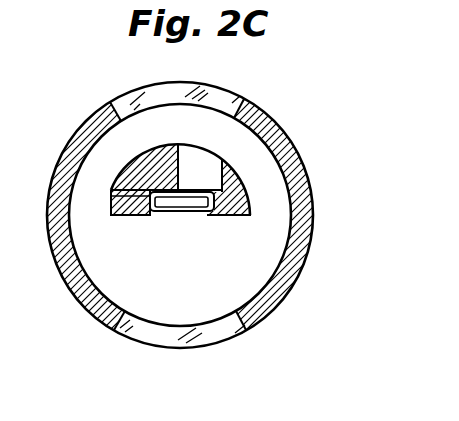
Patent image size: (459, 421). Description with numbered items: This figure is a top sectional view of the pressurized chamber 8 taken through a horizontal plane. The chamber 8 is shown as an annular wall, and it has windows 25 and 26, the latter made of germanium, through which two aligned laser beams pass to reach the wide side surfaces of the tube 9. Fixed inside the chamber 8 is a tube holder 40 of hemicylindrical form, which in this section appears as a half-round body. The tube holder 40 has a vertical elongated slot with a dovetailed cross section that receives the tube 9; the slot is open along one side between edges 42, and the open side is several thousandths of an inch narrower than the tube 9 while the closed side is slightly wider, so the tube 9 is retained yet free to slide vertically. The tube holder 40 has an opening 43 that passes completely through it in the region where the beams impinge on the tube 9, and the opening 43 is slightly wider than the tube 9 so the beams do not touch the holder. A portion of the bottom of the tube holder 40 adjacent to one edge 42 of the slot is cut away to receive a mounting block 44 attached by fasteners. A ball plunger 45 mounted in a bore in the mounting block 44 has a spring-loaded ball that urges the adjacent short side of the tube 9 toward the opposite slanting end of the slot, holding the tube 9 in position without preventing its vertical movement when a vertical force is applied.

The chamber 8 is at (66, 148).
The window made of germanium 26 is at (184, 82).
The window 25 is at (153, 339).
The opening 43 is at (180, 160).
The tube holder 40 is at (222, 190).
The mounting block 44 is at (111, 192).
The edges 42 is at (208, 215).
The ball plunger 45 is at (149, 192).
The tube 9 is at (182, 215).